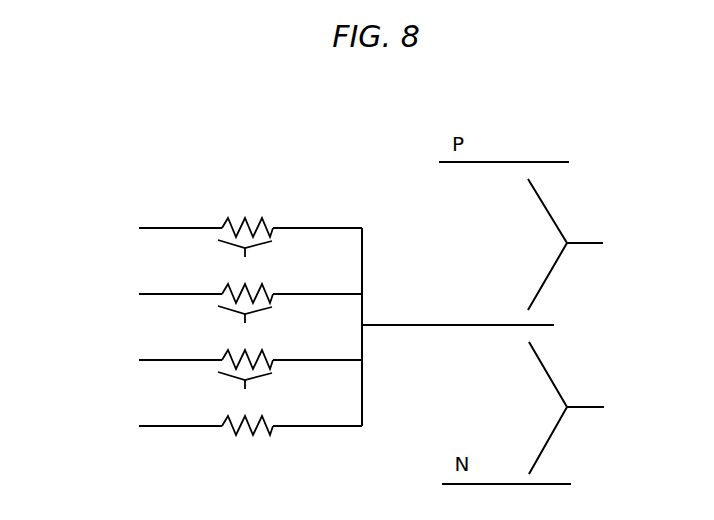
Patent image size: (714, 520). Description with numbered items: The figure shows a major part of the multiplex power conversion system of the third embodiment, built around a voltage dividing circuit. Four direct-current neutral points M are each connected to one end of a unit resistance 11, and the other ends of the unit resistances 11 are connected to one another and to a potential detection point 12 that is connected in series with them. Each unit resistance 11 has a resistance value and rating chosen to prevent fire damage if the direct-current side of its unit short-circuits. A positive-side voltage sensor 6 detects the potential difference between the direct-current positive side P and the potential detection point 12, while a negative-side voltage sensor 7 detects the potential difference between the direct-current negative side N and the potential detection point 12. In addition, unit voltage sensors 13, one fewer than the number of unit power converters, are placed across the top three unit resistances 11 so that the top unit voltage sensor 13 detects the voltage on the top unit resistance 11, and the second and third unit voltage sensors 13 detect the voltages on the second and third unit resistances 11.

The direct-current neutral point M is at (95, 229).
The unit resistance 11 is at (228, 220).
The potential detection point 12 is at (507, 324).
The unit voltage sensor 13 is at (216, 246).
The positive-side voltage sensor 6 is at (583, 245).
The negative-side voltage sensor 7 is at (590, 408).